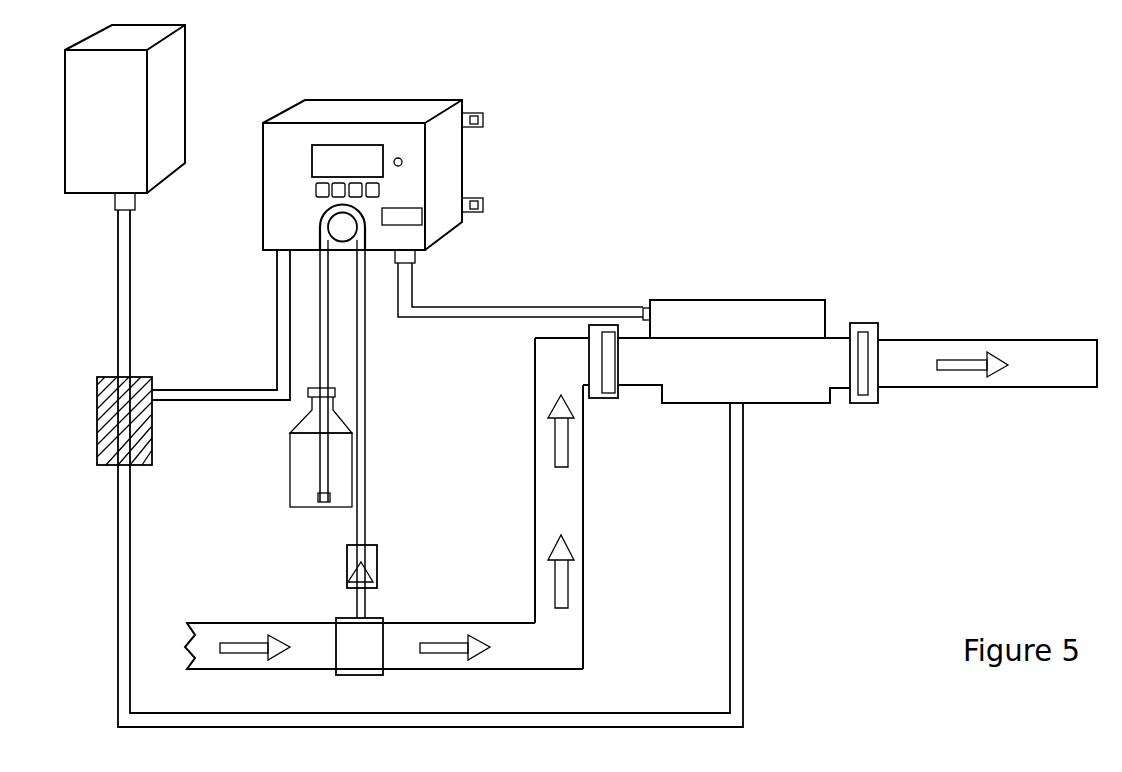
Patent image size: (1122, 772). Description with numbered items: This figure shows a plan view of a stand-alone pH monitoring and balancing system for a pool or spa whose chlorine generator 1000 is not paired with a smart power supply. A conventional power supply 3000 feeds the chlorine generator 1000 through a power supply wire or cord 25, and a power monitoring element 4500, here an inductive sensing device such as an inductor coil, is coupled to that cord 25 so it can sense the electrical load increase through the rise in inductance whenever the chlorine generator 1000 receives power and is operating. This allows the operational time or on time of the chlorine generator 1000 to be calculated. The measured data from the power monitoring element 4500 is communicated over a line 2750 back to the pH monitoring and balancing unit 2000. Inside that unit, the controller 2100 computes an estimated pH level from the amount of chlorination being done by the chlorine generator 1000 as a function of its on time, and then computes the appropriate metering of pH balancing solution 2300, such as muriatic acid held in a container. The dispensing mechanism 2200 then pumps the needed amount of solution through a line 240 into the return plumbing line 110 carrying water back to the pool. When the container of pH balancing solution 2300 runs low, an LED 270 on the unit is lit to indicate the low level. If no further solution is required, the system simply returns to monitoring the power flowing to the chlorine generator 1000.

The power supply 3000 is at (175, 102).
The pH monitoring and balancing unit 2000 is at (353, 108).
The LED 270 is at (402, 162).
The controller 2100 is at (400, 216).
The dispensing mechanism 2200 is at (343, 230).
The line 2750 is at (270, 342).
The line 240 is at (362, 405).
The pH balancing solution 2300 is at (300, 483).
The power monitoring element 4500 is at (175, 443).
The chlorine generator 1000 is at (744, 325).
The return plumbing line 110 is at (570, 538).
The power supply wire or cord 25 is at (597, 712).